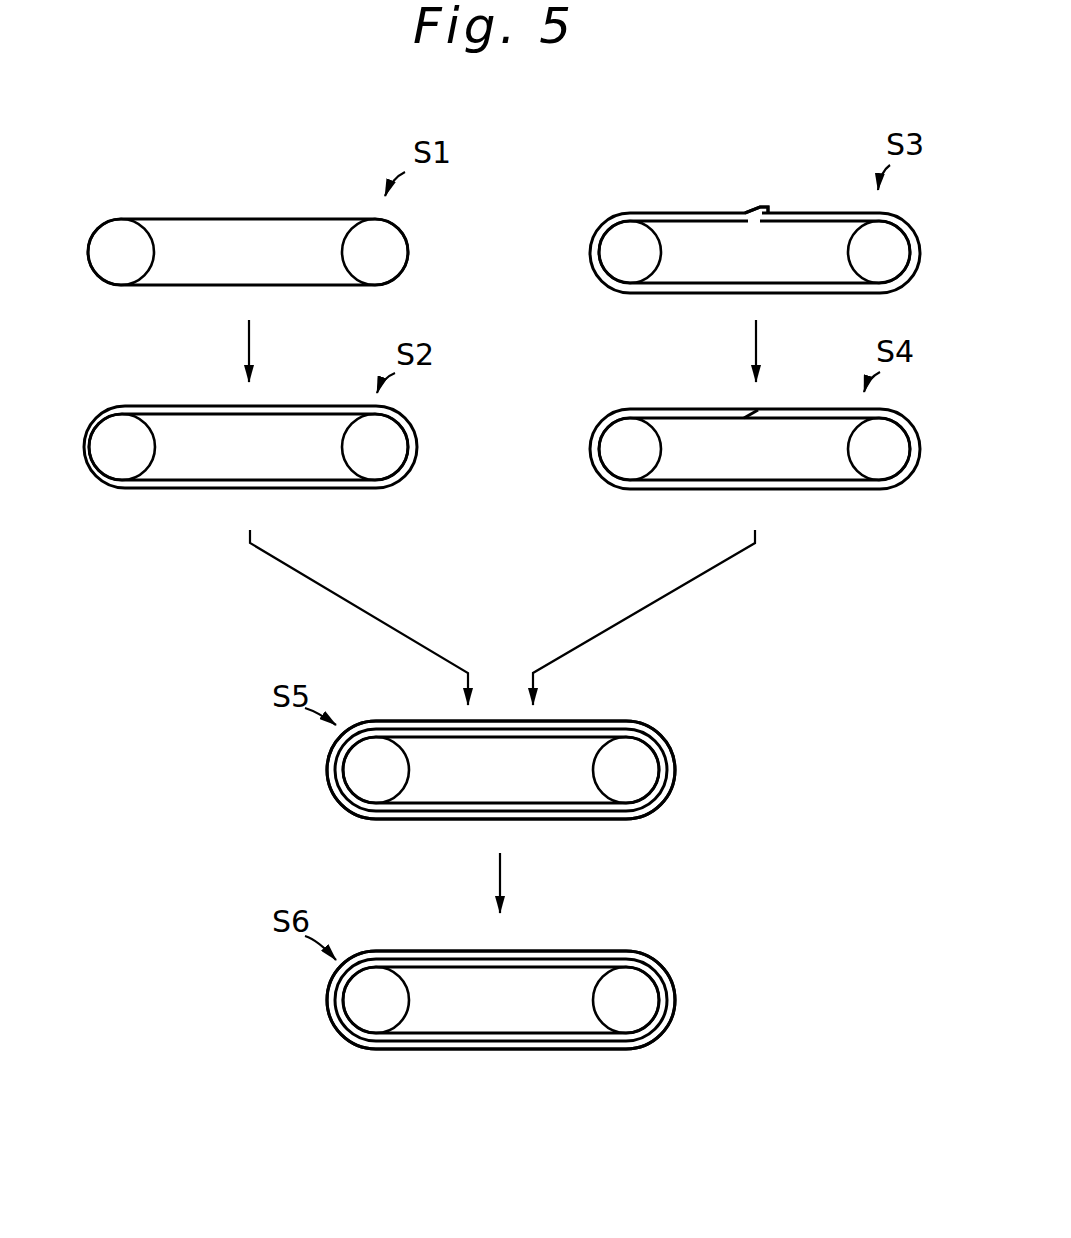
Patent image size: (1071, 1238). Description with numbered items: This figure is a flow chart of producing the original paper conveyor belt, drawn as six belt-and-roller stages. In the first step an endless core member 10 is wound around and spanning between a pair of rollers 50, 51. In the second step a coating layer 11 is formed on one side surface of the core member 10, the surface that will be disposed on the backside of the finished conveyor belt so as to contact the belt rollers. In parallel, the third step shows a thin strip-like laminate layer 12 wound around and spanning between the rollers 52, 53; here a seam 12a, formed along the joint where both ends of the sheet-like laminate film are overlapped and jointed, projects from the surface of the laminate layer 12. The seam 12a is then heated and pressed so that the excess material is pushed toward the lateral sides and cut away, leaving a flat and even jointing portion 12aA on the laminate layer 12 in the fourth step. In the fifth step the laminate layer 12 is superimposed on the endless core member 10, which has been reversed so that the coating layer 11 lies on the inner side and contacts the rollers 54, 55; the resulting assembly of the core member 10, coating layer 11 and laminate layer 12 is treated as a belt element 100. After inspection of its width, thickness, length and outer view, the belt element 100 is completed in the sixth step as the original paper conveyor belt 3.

The endless core member 10 is at (285, 219).
The coating layer 11 is at (322, 407).
The laminate layer 12 is at (813, 213).
The seam 12a is at (761, 205).
The flat and even jointing portion 12aA is at (750, 409).
The roller 50 is at (152, 251).
The roller 51 is at (346, 251).
The roller 52 is at (658, 252).
The roller 53 is at (852, 251).
The roller 54 is at (406, 771).
The roller 55 is at (598, 771).
The belt element 100 is at (648, 703).
The original paper conveyor belt 3 is at (628, 941).